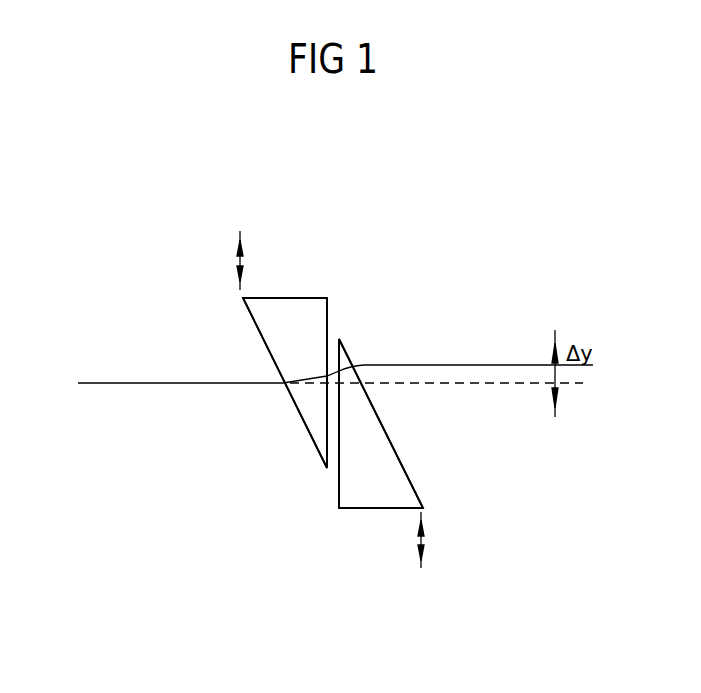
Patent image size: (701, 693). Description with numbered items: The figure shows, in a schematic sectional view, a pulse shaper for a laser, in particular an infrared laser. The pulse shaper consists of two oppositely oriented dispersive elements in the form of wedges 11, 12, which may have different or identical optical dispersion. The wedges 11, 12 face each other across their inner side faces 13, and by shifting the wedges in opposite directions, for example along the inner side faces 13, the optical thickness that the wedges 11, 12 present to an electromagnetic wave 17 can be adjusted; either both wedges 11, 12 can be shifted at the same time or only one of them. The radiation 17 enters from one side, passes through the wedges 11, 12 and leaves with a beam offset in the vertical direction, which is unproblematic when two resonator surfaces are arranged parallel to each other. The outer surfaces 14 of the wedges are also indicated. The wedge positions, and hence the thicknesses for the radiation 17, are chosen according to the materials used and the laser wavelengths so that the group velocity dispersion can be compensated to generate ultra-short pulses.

The wedge 11 is at (278, 307).
The wedge 12 is at (388, 500).
The inner side faces 13 is at (332, 318).
The prism base surfaces 14 is at (315, 298).
The electromagnetic wave 17 is at (103, 383).